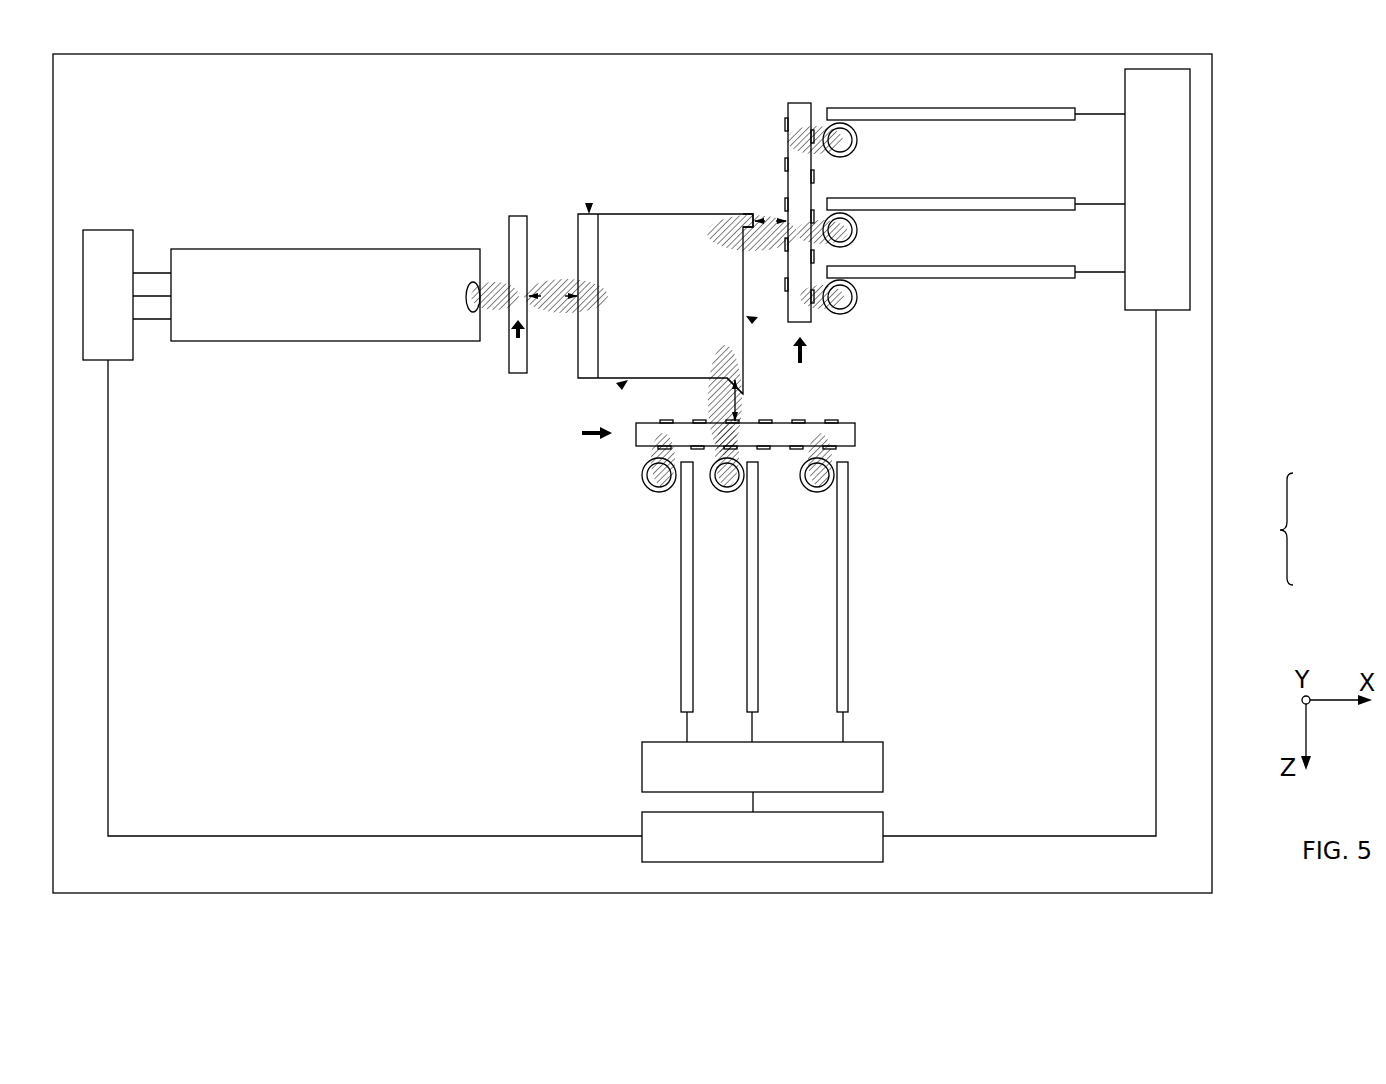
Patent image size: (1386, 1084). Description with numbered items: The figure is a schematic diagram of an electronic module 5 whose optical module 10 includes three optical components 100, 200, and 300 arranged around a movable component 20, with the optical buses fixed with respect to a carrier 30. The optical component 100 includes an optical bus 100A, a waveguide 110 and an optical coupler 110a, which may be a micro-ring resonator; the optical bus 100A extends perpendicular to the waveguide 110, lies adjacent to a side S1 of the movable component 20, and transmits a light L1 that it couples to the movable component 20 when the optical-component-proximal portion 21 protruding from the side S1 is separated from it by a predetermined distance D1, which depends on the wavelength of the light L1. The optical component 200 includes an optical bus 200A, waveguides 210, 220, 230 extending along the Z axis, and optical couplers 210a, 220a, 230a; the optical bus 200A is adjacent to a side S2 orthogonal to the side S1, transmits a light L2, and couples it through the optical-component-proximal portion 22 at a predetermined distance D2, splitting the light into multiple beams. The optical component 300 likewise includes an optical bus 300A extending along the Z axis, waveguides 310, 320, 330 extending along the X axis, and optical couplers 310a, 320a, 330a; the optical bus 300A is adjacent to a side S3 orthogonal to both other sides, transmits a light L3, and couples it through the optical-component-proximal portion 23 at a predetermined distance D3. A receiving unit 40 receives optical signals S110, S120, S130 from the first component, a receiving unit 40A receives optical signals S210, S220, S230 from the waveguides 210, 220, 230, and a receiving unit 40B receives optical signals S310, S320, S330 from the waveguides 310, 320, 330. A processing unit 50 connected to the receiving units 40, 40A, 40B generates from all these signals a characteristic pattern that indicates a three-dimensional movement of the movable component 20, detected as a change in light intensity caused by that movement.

The electronic module 5 is at (1359, 44).
The optical module 10 is at (1292, 529).
The movable component 20 is at (700, 246).
The optical-component-proximal portion 21 is at (577, 222).
The optical-component-proximal portion 22 is at (744, 392).
The optical-component-proximal portion 23 is at (752, 214).
The carrier 30 is at (1203, 93).
The receiving unit 40 is at (108, 295).
The receiving unit 40A is at (762, 767).
The receiving unit 40B is at (1157, 189).
The processing unit 50 is at (762, 837).
The optical component 100 is at (404, 188).
The optical bus 100A is at (516, 216).
The waveguide 110 is at (353, 249).
The optical coupler 110a is at (471, 283).
The optical component 200 is at (791, 581).
The optical bus 200A is at (636, 436).
The waveguide 210 is at (681, 670).
The optical coupler 210a is at (656, 491).
The waveguide 220 is at (758, 668).
The optical coupler 220a is at (732, 490).
The waveguide 230 is at (849, 662).
The optical coupler 230a is at (826, 488).
The optical component 300 is at (953, 162).
The optical bus 300A is at (800, 102).
The waveguide 310 is at (1020, 279).
The optical coupler 310a is at (857, 297).
The waveguide 320 is at (1020, 211).
The optical coupler 320a is at (857, 230).
The waveguide 330 is at (1020, 121).
The optical coupler 330a is at (857, 140).
The optical signal S110 is at (147, 272).
The optical signal S120 is at (156, 295).
The optical signal S130 is at (157, 320).
The optical signal S210 is at (686, 722).
The optical signal S220 is at (752, 722).
The optical signal S230 is at (843, 722).
The optical signal S310 is at (1093, 274).
The optical signal S320 is at (1093, 206).
The optical signal S330 is at (1093, 116).
The side S1 is at (589, 204).
The side S2 is at (620, 385).
The side S3 is at (754, 320).
The light L1 is at (516, 345).
The light L2 is at (578, 435).
The light L3 is at (808, 352).
The predetermined distance D1 is at (553, 299).
The predetermined distance D2 is at (740, 410).
The predetermined distance D3 is at (772, 216).